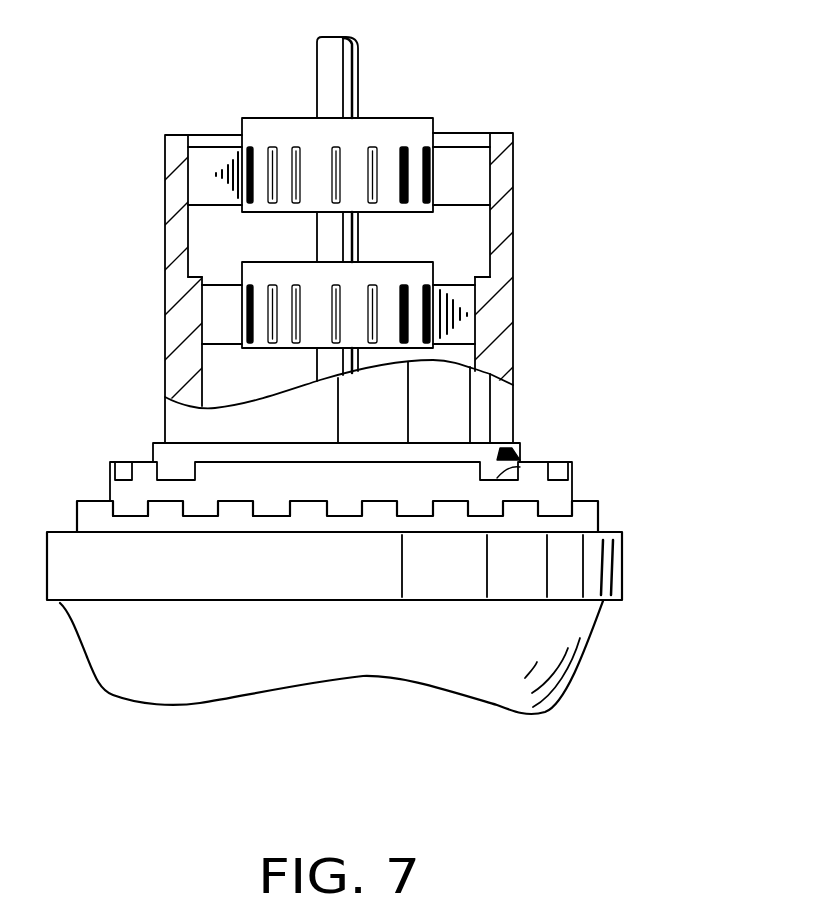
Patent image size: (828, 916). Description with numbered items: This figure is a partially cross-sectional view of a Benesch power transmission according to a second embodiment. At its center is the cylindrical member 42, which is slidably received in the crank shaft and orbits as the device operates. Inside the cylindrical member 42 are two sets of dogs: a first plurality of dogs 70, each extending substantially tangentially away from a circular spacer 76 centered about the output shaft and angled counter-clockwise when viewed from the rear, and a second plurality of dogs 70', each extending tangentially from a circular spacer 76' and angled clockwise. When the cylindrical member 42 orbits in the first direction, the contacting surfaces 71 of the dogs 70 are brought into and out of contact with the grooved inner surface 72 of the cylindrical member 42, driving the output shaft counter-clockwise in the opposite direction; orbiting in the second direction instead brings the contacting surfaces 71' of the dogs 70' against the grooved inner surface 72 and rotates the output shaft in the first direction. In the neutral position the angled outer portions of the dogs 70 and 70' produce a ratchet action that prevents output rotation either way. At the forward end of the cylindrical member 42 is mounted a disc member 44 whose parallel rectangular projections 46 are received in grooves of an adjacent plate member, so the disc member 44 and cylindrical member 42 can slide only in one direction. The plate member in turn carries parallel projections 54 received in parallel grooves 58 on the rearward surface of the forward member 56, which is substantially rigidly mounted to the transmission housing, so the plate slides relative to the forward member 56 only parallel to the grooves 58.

The cylindrical member 42 is at (175, 312).
The disc member 44 is at (507, 456).
The parallel projections 46 is at (520, 480).
The parallel projections 54 is at (130, 510).
The forward member 56 is at (590, 570).
The parallel grooves 58 is at (195, 518).
The first plurality of dogs 70 is at (375, 142).
The second plurality of dogs 70' is at (316, 345).
The contacting surfaces 71 is at (208, 147).
The contacting surfaces 71' is at (508, 305).
The grooved inner surface 72 is at (490, 229).
The circular spacer 76 is at (337, 146).
The circular spacer 76' is at (337, 282).